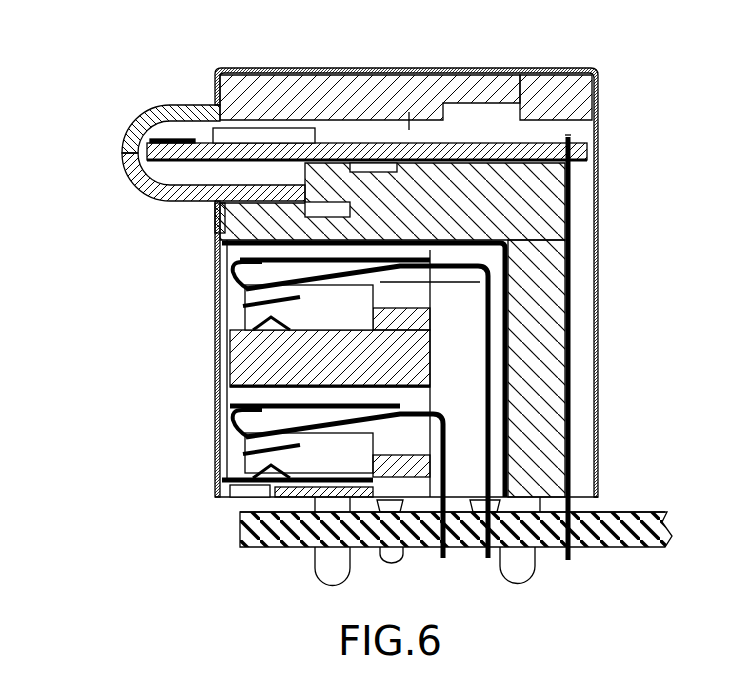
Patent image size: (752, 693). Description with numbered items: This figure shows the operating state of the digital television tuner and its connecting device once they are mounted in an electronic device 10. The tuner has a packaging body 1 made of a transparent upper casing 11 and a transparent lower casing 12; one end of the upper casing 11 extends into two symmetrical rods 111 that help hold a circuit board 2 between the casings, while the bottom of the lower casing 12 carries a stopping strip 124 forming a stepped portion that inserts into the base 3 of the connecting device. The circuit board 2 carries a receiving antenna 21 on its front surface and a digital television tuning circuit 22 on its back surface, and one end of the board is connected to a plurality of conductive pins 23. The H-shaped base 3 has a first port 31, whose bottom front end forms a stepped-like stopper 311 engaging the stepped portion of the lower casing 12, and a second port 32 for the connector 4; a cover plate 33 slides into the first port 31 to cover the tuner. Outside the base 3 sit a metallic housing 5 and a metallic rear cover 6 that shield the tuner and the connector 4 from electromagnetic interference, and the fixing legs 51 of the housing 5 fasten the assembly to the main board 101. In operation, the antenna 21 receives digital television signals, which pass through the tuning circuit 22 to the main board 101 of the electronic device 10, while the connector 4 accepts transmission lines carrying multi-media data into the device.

The packaging body 1 is at (173, 97).
The upper casing 11 is at (157, 110).
The lower casing 12 is at (157, 198).
The circuit board 2 is at (185, 159).
The receiving antenna 21 is at (160, 140).
The digital television tuning circuit 22 is at (272, 128).
The base 3 is at (543, 213).
The first port 31 is at (476, 112).
The stopper 311 is at (213, 214).
The second port 32 is at (506, 370).
The cover plate 33 is at (532, 82).
The connector 4 is at (210, 440).
The metallic housing 5 is at (217, 355).
The metallic rear cover 6 is at (600, 126).
The conductive pins 23 is at (568, 278).
The rods 111 is at (410, 120).
The stopping strip 124 is at (250, 222).
The electronic device 10 is at (270, 556).
The main board 101 is at (255, 530).
The fixing legs 51 is at (523, 557).